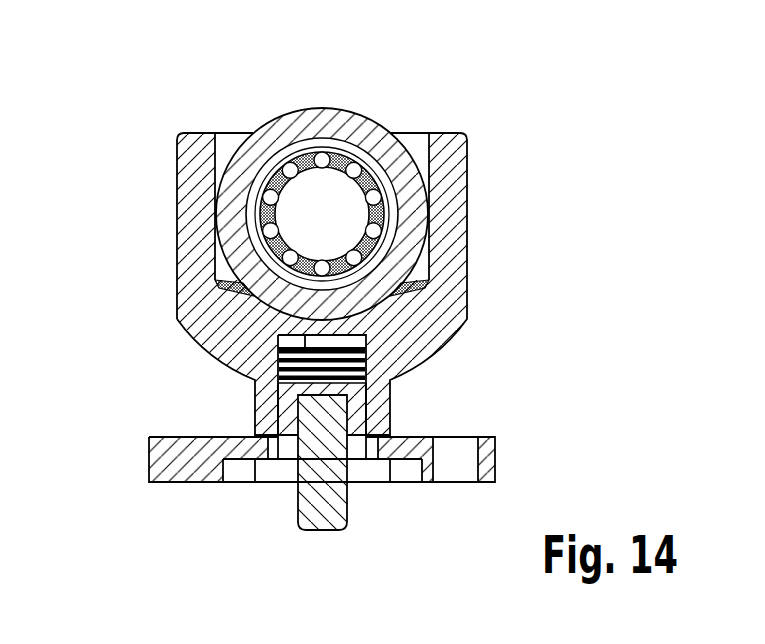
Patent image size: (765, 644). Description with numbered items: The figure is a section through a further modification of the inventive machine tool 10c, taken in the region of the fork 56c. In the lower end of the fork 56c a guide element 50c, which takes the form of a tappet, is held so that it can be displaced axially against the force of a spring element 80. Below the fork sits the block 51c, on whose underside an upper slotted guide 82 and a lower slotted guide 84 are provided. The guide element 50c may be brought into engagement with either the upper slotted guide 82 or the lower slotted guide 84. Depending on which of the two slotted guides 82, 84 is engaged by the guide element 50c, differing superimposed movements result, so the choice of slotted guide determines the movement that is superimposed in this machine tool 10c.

The machine tool 10c is at (118, 102).
The fork 56c is at (453, 198).
The spring element 80 is at (372, 370).
The upper slotted guide 82 is at (362, 452).
The lower slotted guide 84 is at (410, 470).
The block 51c is at (181, 468).
The guide element 50c is at (322, 500).